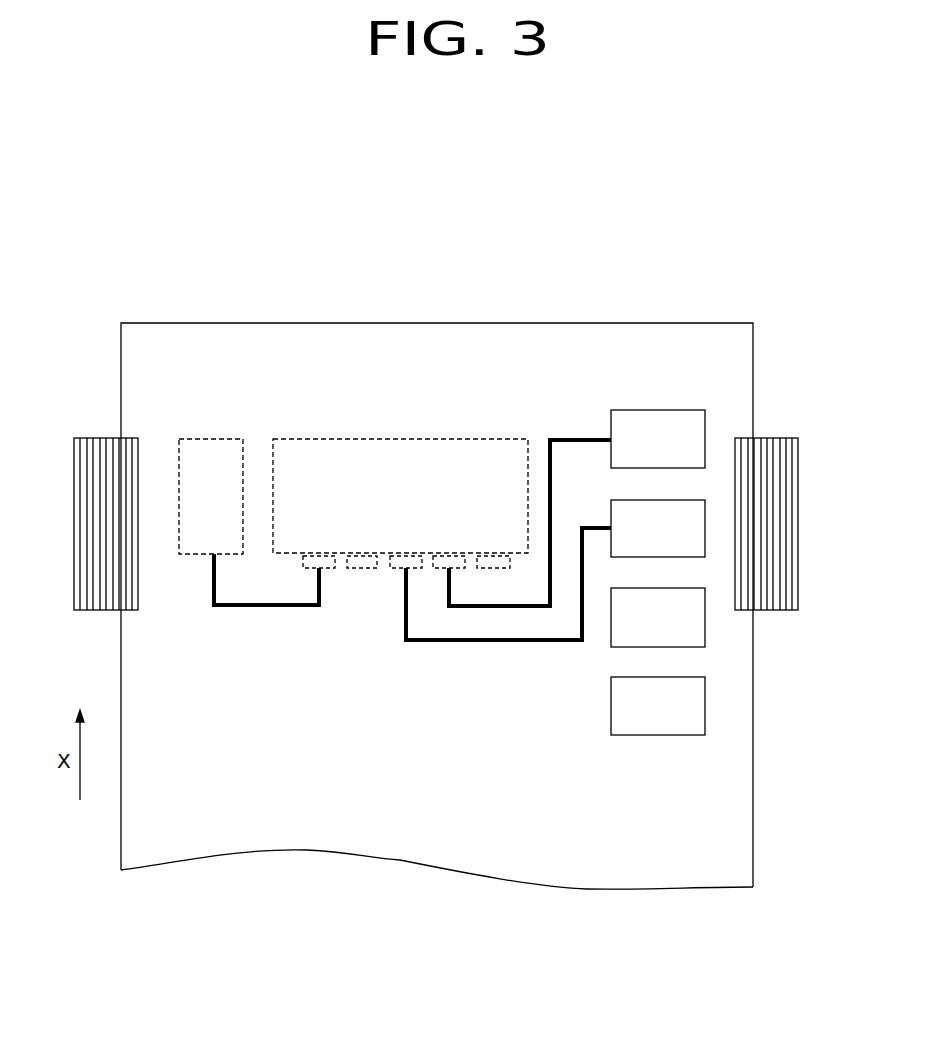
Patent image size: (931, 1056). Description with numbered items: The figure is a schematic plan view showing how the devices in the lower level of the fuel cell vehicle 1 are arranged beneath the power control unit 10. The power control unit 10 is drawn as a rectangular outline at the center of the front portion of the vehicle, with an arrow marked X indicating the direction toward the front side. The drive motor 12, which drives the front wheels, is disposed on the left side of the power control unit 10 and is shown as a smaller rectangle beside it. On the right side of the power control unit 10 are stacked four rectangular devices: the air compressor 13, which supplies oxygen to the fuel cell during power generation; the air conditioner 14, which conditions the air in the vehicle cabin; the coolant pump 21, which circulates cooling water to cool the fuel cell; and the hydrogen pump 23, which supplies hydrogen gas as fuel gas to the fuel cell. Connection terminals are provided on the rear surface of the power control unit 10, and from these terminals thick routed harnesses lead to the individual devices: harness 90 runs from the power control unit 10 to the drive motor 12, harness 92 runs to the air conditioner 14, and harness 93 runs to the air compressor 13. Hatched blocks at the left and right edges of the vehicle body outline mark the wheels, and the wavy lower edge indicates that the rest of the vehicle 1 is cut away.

The fuel cell vehicle 1 is at (458, 290).
The power control unit 10 is at (367, 434).
The drive motor 12 is at (220, 436).
The air compressor 13 is at (707, 440).
The air conditioner 14 is at (707, 523).
The coolant pump 21 is at (707, 618).
The hydrogen pump 23 is at (707, 708).
The harness 90 is at (212, 564).
The harness 92 is at (403, 588).
The harness 93 is at (453, 587).